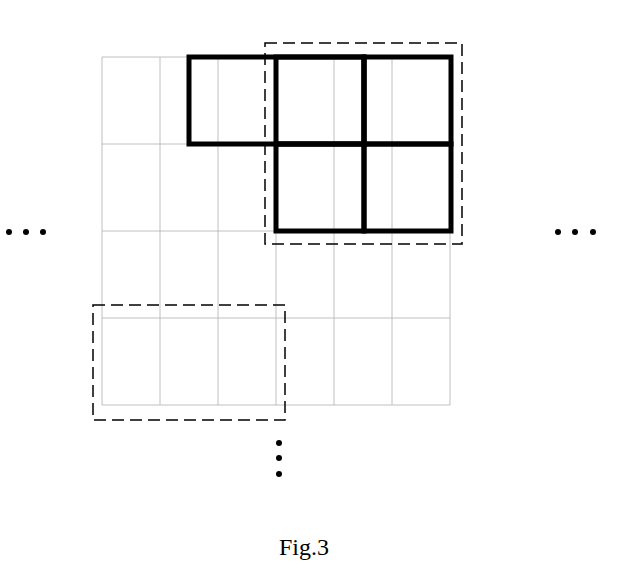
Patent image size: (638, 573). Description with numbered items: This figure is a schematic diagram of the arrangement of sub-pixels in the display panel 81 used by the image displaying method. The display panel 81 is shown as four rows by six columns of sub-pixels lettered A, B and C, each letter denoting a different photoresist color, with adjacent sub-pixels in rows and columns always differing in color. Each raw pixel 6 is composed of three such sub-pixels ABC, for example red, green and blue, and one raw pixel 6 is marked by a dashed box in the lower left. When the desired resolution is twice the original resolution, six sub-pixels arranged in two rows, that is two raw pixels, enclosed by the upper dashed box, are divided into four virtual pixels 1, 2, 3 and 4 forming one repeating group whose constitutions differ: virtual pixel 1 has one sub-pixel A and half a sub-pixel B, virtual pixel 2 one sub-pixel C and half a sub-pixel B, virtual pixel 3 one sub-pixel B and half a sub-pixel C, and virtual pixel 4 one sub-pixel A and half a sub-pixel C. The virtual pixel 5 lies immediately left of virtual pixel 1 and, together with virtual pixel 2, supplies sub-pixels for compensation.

The virtual pixel 1 is at (320, 77).
The virtual pixel 2 is at (407, 85).
The virtual pixel 3 is at (319, 207).
The virtual pixel 4 is at (430, 202).
The virtual pixel 5 is at (233, 78).
The raw pixel 6 is at (190, 420).
The display panel 81 is at (431, 432).